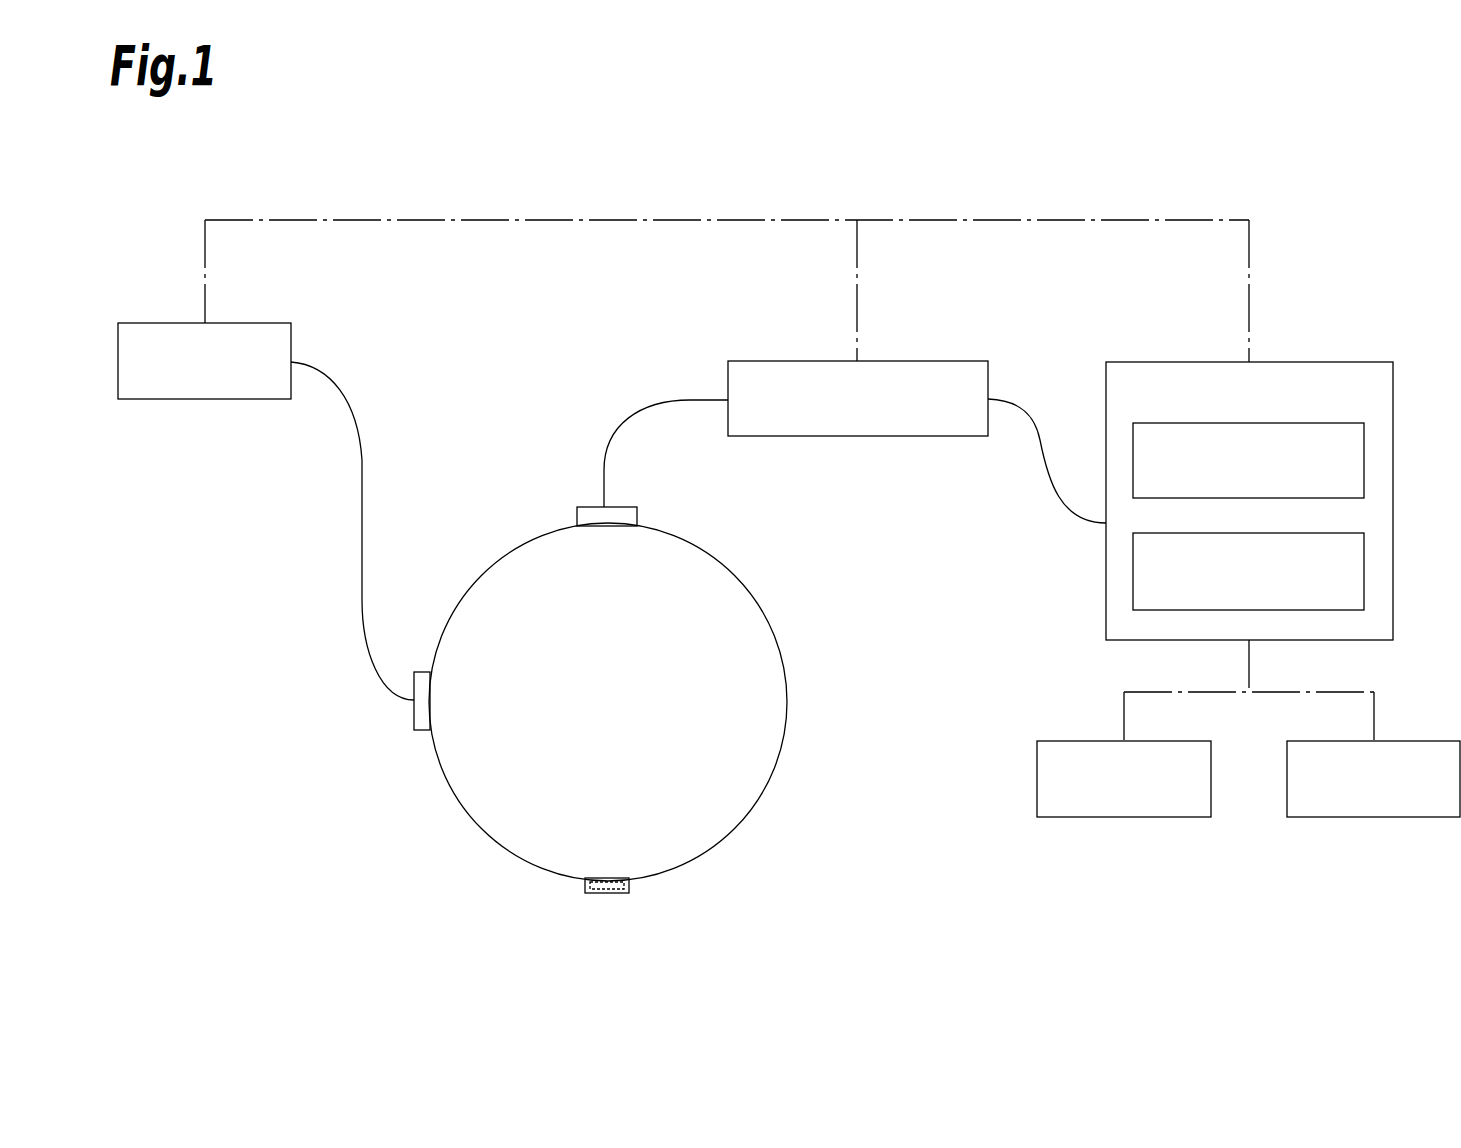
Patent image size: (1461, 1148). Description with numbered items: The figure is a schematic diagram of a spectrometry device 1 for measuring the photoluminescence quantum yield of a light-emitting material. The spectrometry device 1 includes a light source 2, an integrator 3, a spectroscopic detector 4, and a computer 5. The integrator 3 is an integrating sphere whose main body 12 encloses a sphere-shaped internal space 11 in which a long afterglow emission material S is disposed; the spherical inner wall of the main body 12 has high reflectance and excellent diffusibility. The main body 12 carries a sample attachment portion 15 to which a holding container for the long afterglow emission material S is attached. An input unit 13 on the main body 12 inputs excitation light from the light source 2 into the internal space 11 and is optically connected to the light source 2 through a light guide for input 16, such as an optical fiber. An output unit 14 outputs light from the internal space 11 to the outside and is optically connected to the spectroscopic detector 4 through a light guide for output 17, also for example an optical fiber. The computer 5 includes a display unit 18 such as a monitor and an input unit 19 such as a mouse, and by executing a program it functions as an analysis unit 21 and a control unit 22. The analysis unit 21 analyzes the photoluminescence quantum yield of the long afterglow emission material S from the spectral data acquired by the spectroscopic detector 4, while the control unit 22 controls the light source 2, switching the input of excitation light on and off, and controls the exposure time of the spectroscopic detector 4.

The spectrometry device 1 is at (176, 193).
The light source 2 is at (250, 323).
The integrator 3 is at (408, 874).
The spectroscopic detector 4 is at (942, 361).
The computer 5 is at (1345, 362).
The internal space 11 is at (624, 702).
The main body 12 is at (783, 740).
The input unit 13 is at (413, 717).
The output unit 14 is at (628, 506).
The sample attachment portion 15 is at (641, 921).
The light guide for input 16 is at (334, 378).
The light guide for output 17 is at (662, 400).
The display unit 18 is at (1176, 817).
The input unit 19 is at (1427, 817).
The analysis unit 21 is at (1364, 551).
The control unit 22 is at (1364, 441).
The long afterglow emission material S is at (607, 895).